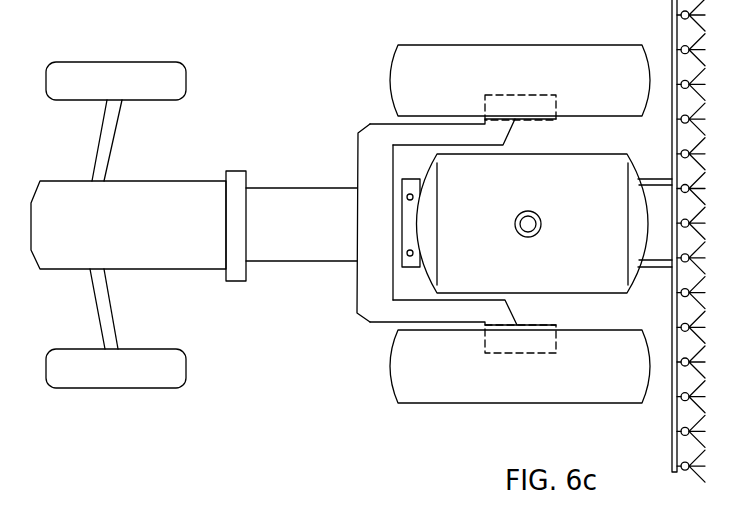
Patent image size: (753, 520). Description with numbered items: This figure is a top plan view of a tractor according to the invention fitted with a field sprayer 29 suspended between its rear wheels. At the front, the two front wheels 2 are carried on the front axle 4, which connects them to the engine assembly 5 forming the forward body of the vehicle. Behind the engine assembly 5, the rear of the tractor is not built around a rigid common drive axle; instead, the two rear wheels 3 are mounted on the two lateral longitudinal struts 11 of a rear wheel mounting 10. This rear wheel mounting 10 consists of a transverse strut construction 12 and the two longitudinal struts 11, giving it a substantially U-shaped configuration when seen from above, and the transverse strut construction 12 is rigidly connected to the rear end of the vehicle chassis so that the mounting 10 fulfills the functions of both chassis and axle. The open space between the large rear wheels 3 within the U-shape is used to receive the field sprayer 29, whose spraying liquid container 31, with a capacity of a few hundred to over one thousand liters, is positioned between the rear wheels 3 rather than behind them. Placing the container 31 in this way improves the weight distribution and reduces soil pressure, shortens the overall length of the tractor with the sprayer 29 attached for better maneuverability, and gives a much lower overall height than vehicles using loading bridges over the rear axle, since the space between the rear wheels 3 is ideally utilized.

The front wheels 2 is at (72, 72).
The rear wheels 3 is at (428, 55).
The front axle 4 is at (100, 304).
The engine assembly 5 is at (160, 190).
The rear wheel mounting 10 is at (432, 222).
The longitudinal struts 11 is at (403, 137).
The transverse strut construction 12 is at (367, 287).
The field sprayer 29 is at (412, 165).
The spraying liquid container 31 is at (603, 164).